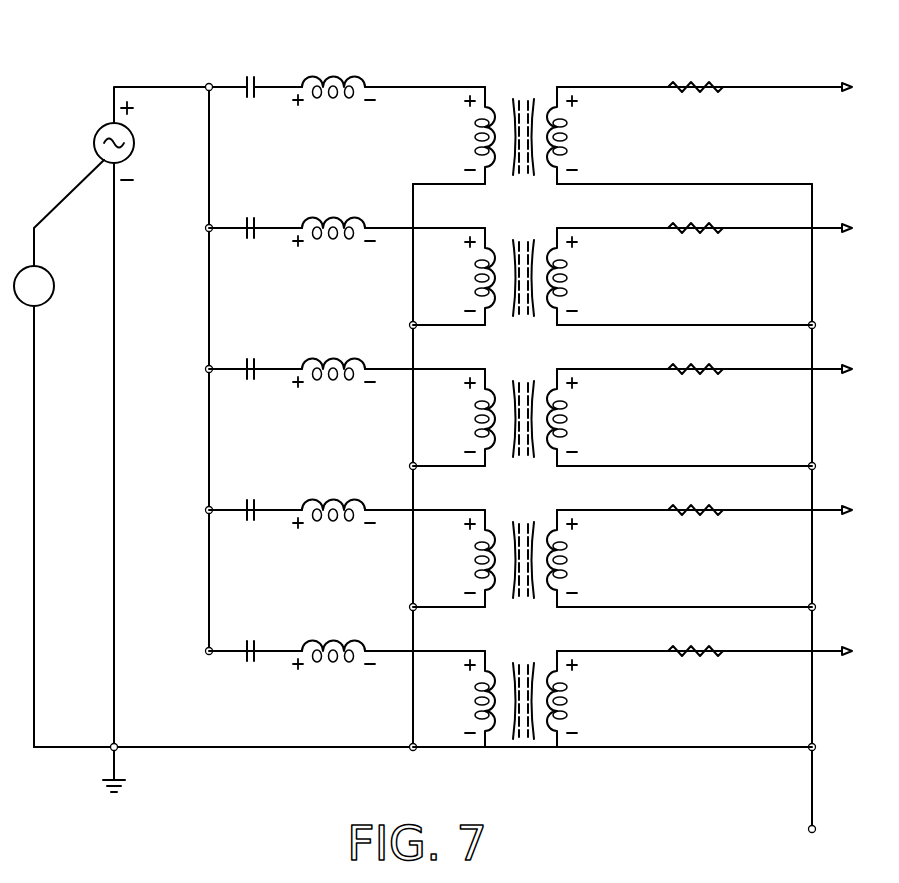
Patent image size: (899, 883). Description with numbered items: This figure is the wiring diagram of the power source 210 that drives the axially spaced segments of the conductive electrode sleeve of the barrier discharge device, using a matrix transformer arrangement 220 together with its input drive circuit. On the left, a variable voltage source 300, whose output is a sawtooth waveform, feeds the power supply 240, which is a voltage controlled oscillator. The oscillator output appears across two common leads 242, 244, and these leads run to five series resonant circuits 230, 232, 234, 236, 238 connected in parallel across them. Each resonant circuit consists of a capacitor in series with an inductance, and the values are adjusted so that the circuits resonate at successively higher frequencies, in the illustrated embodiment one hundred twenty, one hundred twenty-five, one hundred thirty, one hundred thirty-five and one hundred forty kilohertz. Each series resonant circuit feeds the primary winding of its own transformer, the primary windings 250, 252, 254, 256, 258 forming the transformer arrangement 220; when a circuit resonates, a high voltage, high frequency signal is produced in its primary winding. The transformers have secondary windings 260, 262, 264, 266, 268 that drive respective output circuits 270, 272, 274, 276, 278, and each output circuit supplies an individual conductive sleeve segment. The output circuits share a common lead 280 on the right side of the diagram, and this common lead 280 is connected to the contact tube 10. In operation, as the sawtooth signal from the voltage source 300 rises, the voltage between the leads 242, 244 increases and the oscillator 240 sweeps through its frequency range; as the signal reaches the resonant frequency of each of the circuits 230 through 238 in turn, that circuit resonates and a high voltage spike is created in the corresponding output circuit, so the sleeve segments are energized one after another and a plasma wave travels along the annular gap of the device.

The contact tube 10 is at (808, 829).
The power source 210 is at (225, 771).
The transformer output arrangement 220 is at (534, 71).
The series resonant circuit 230 is at (340, 78).
The series resonant circuit 232 is at (327, 218).
The series resonant circuit 234 is at (327, 358).
The series resonant circuit 236 is at (330, 500).
The series resonant circuit 238 is at (327, 640).
The power supply 240 is at (98, 132).
The common lead 242 is at (158, 85).
The common lead 244 is at (285, 750).
The primary winding 250 is at (482, 137).
The primary winding 252 is at (482, 276).
The primary winding 254 is at (482, 418).
The primary winding 256 is at (482, 559).
The primary winding 258 is at (482, 698).
The secondary winding 260 is at (560, 142).
The secondary winding 262 is at (560, 283).
The secondary winding 264 is at (560, 424).
The secondary winding 266 is at (560, 567).
The secondary winding 268 is at (560, 705).
The output circuit 270 is at (759, 89).
The output circuit 272 is at (746, 231).
The output circuit 274 is at (764, 372).
The output circuit 276 is at (764, 513).
The output circuit 278 is at (762, 653).
The common lead 280 is at (812, 766).
The voltage source 300 is at (49, 301).